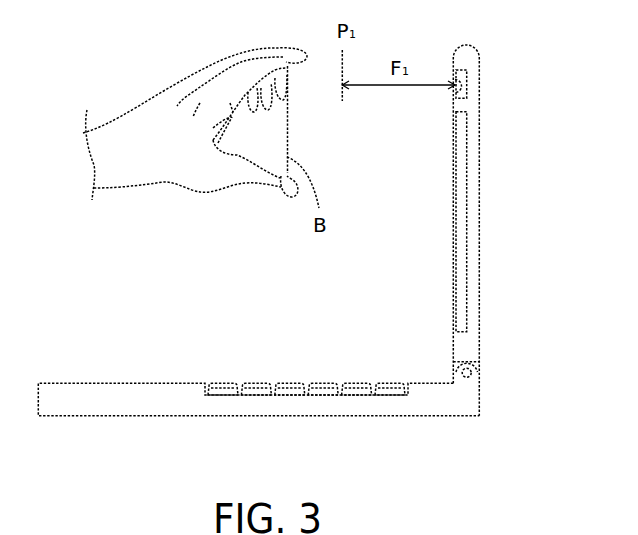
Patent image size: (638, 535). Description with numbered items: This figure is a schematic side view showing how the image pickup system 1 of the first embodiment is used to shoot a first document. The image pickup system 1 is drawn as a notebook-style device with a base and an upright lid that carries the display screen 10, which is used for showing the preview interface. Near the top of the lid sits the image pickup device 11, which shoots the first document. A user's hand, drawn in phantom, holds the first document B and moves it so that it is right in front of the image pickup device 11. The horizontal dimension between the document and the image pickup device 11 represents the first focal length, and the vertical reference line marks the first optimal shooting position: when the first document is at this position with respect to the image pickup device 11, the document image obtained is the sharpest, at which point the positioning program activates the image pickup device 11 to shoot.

The image pickup system 1 is at (512, 95).
The display screen 10 is at (459, 213).
The image pickup device 11 is at (464, 75).